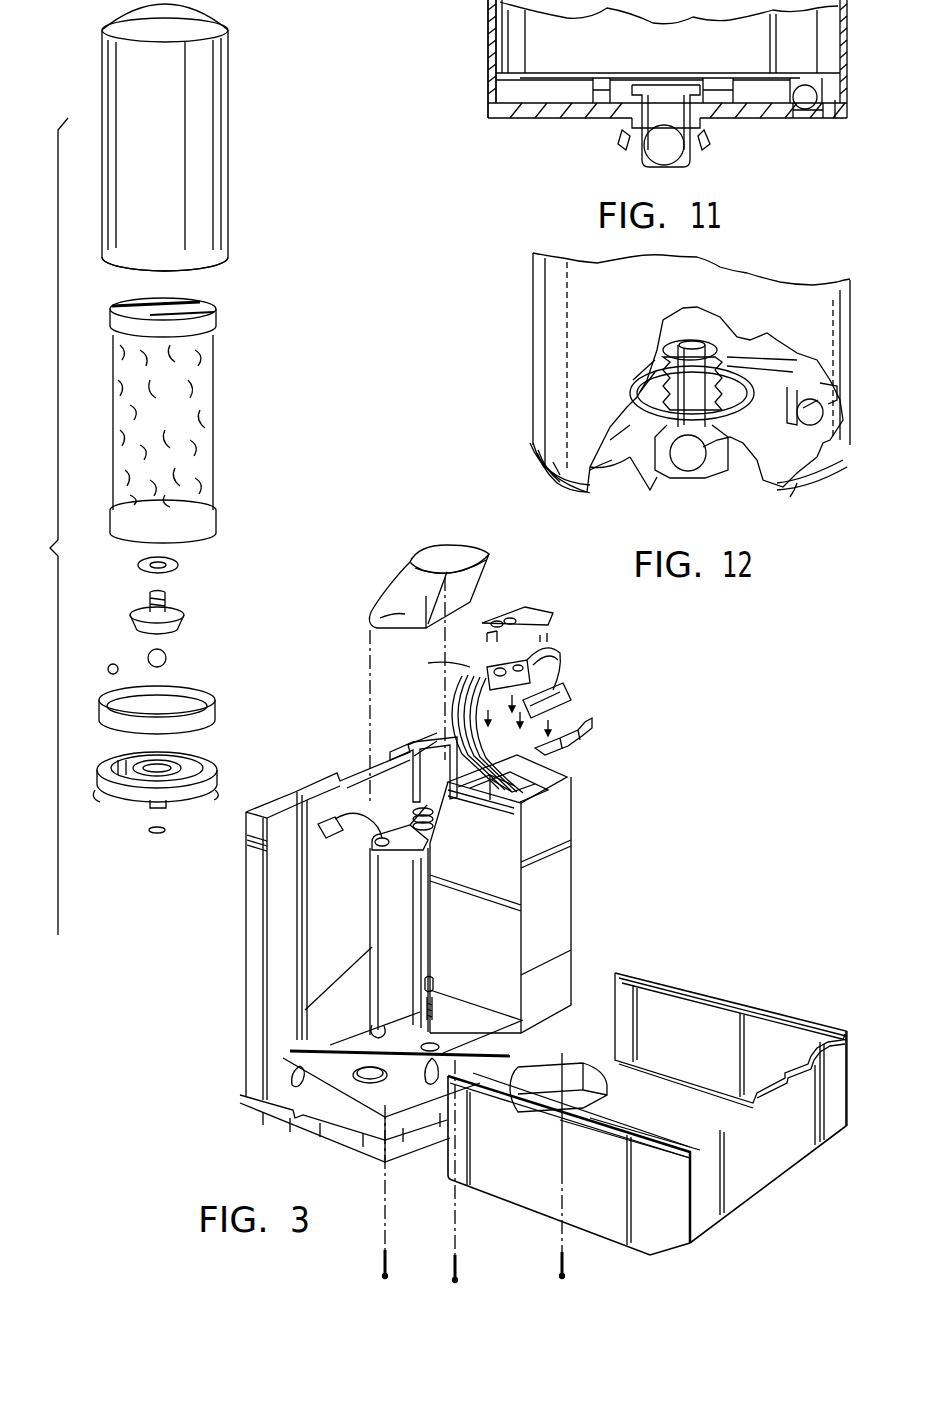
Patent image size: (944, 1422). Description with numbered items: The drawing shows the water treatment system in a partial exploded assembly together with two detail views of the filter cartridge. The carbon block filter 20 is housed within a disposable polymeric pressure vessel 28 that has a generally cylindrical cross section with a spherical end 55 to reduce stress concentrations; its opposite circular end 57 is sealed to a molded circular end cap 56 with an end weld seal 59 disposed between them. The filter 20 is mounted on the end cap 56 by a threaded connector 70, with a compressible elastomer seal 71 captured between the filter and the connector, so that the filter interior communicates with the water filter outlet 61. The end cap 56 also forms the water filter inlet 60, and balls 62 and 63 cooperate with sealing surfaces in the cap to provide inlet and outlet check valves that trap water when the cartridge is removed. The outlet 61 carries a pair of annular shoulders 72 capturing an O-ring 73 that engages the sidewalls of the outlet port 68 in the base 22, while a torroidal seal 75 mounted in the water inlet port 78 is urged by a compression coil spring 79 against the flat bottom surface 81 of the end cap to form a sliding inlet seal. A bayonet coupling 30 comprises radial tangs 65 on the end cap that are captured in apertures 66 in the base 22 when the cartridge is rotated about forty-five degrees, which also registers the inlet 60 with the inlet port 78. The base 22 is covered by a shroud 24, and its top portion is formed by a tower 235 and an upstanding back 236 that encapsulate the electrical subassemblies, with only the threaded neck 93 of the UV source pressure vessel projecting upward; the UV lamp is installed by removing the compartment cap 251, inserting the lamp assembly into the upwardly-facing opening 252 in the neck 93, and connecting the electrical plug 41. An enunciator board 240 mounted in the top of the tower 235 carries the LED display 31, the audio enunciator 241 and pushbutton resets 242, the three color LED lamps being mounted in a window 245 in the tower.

In FIG. 3, the filter 20 is at (163, 420).
In FIG. 3, the base 22 is at (340, 1140).
In FIG. 3, the shroud 24 is at (647, 1114).
In FIG. 3, the pressure vessel 28 is at (165, 137).
In FIG. 3, the bayonet coupling 30 is at (174, 811).
In FIG. 12, the bayonet coupling 30 is at (498, 440).
In FIG. 3, the LED display 31 is at (573, 696).
In FIG. 3, the electrical plug 41 is at (320, 838).
In FIG. 3, the spherical end 55 is at (228, 12).
In FIG. 11, the end cap 56 is at (528, 108).
In FIG. 12, the end cap 56 is at (773, 483).
In FIG. 3, the circular end 57 is at (214, 262).
In FIG. 11, the circular end 57 is at (488, 98).
In FIG. 12, the circular end 57 is at (530, 412).
In FIG. 3, the end weld seal 59 is at (200, 690).
In FIG. 11, the water filter inlet 60 is at (800, 118).
In FIG. 11, the water filter outlet 61 is at (664, 165).
In FIG. 12, the water filter outlet 61 is at (683, 478).
In FIG. 3, the ball 62 is at (109, 665).
In FIG. 11, the ball 62 is at (805, 85).
In FIG. 12, the ball 62 is at (823, 390).
In FIG. 3, the ball 63 is at (149, 655).
In FIG. 11, the ball 63 is at (662, 128).
In FIG. 12, the ball 63 is at (696, 472).
In FIG. 3, the radial tangs 65 is at (95, 795).
In FIG. 12, the radial tangs 65 is at (540, 460).
In FIG. 3, the apertures 66 is at (410, 1033).
In FIG. 3, the outlet port 68 is at (360, 1066).
In FIG. 3, the threaded connector 70 is at (175, 612).
In FIG. 12, the threaded connector 70 is at (750, 380).
In FIG. 3, the elastomer seal 71 is at (178, 562).
In FIG. 11, the annular shoulders 72 is at (620, 132).
In FIG. 11, the O-ring 73 is at (708, 138).
In FIG. 3, the torroidal seal 75 is at (433, 978).
In FIG. 3, the water inlet port 78 is at (438, 1043).
In FIG. 3, the compression coil spring 79 is at (436, 1000).
In FIG. 11, the bottom surface 81 is at (838, 120).
In FIG. 3, the threaded neck 93 is at (427, 845).
In FIG. 3, the tower 235 is at (556, 860).
In FIG. 3, the back 236 is at (245, 972).
In FIG. 3, the enunciator board 240 is at (553, 655).
In FIG. 3, the audio enunciator 241 is at (523, 652).
In FIG. 3, the pushbutton resets 242 is at (433, 653).
In FIG. 3, the window 245 is at (540, 787).
In FIG. 3, the compartment cap 251 is at (400, 585).
In FIG. 3, the upwardly-facing opening 252 is at (413, 755).